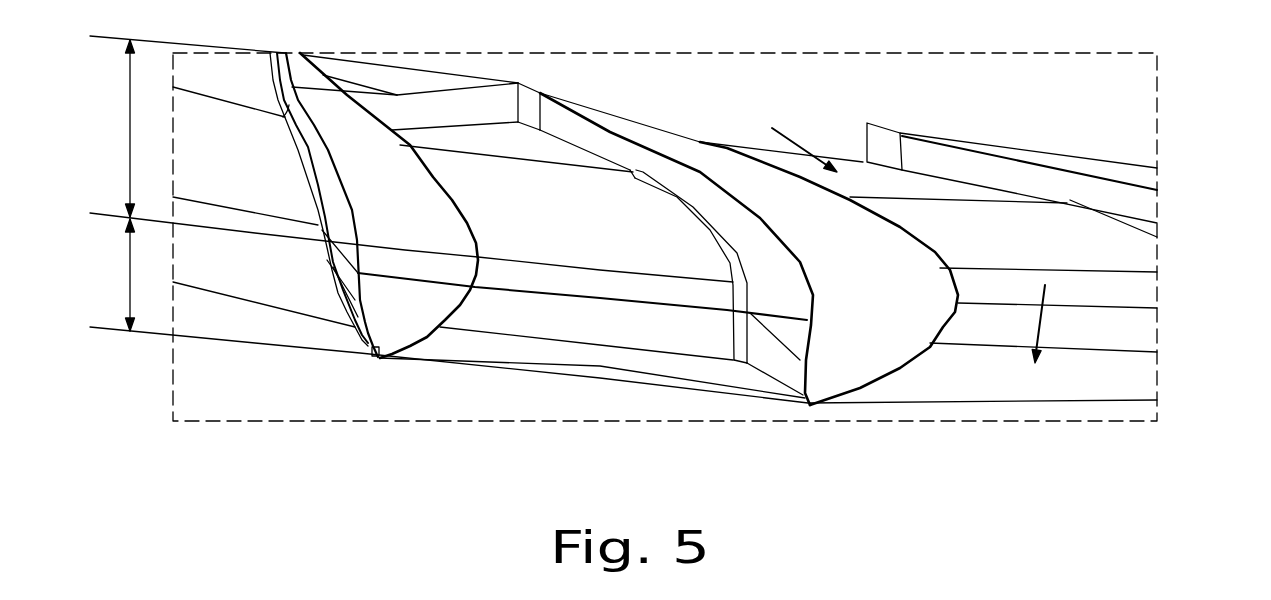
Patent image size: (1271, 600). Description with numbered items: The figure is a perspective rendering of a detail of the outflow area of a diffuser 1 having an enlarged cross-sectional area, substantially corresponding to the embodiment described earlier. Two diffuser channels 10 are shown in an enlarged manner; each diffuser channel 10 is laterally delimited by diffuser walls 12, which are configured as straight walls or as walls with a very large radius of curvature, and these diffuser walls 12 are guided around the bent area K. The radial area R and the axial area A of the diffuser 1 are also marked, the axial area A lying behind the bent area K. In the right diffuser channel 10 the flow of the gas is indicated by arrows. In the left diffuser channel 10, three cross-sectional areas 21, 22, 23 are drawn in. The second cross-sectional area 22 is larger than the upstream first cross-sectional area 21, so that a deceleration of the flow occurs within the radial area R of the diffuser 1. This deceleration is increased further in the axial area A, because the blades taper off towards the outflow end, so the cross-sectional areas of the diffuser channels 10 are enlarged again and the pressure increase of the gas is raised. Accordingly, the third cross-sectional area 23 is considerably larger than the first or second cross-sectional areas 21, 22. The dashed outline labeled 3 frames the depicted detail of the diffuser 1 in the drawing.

The diffuser 1 is at (322, 359).
The hull section / boundary 3 is at (364, 362).
The diffuser channel 10 is at (533, 192).
The diffuser wall 12 is at (967, 160).
The first cross-sectional area 21 is at (468, 95).
The second cross-sectional area 22 is at (563, 281).
The third cross-sectional area 23 is at (583, 355).
The bent area K is at (1108, 265).
The radial area R is at (184, 126).
The axial area A is at (113, 275).